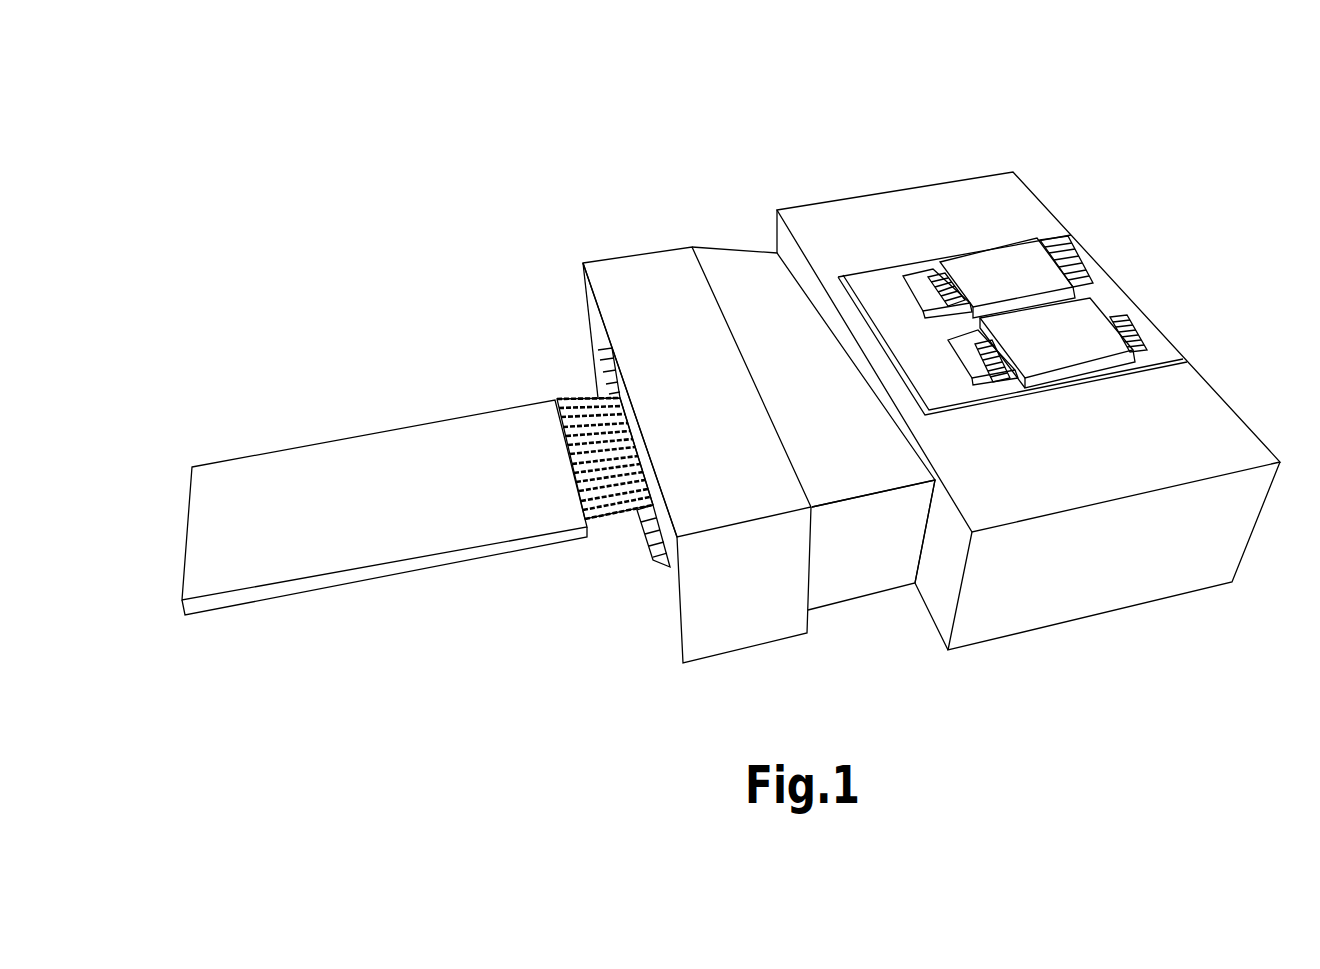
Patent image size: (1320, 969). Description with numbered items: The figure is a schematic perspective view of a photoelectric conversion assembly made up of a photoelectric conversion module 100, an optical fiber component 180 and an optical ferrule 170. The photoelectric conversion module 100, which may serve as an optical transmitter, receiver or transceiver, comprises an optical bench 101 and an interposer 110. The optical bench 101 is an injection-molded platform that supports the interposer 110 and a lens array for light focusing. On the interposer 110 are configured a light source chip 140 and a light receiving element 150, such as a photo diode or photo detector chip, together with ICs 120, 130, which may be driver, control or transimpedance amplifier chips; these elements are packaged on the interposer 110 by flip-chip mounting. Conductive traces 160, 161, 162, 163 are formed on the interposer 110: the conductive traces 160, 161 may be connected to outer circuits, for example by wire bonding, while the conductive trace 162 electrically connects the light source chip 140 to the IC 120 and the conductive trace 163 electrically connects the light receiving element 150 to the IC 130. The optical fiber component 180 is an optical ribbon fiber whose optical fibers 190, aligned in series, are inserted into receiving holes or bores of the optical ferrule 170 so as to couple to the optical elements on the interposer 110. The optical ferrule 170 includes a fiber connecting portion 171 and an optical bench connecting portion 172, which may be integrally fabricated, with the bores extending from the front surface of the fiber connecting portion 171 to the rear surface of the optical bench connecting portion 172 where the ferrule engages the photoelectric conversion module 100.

The photoelectric conversion module 100 is at (838, 112).
The optical bench 101 is at (1035, 613).
The interposer 110 is at (877, 303).
The IC 120 is at (1003, 267).
The IC 130 is at (1085, 313).
The light source chip 140 is at (907, 278).
The light receiving element 150 is at (957, 350).
The conductive trace 160 is at (1127, 325).
The conductive trace 161 is at (1075, 260).
The conductive trace 162 is at (933, 282).
The conductive trace 163 is at (995, 375).
The optical ferrule 170 is at (650, 197).
The fiber connecting portion 171 is at (670, 285).
The optical bench connecting portion 172 is at (752, 270).
The optical fiber component 180 is at (430, 427).
The optical fibers 190 is at (583, 405).